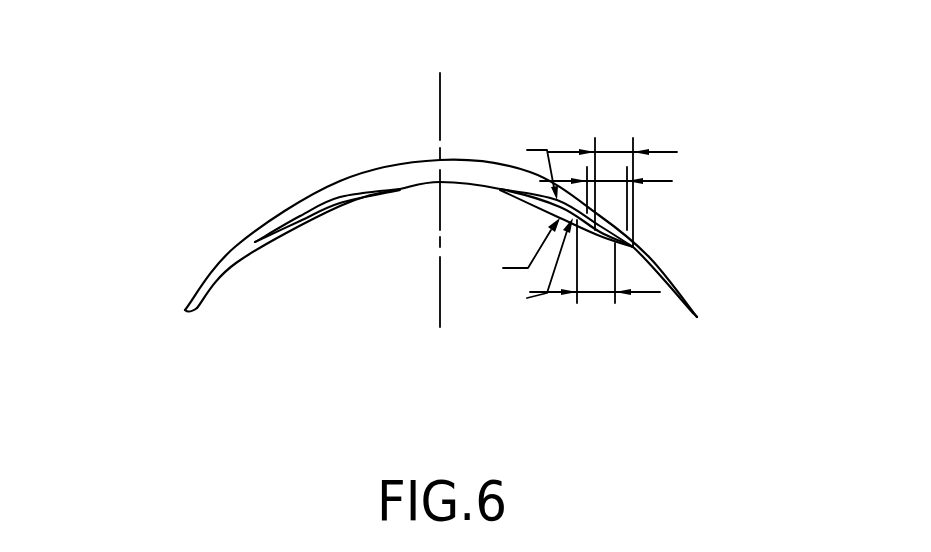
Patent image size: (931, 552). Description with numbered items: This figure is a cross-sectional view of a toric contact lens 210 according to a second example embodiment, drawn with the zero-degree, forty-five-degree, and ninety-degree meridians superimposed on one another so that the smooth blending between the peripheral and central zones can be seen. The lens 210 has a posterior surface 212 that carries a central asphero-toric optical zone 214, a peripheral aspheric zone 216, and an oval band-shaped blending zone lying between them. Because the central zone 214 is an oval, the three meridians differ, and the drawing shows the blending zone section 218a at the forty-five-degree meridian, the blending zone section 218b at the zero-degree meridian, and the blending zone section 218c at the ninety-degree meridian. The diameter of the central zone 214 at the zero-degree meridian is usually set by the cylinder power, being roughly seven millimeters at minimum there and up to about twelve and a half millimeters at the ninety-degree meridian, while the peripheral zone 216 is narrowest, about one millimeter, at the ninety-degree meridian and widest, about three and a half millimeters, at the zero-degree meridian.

The toric contact lens 210 is at (198, 150).
The posterior surface 212 is at (198, 309).
The central asphero-toric optical zone 214 is at (360, 198).
The peripheral aspheric zone 216 is at (236, 263).
The blending zone section at the R45 meridian 218a is at (608, 182).
The blending zone section at the R0 meridian 218b is at (597, 292).
The blending zone section at the R90 meridian 218c is at (617, 152).